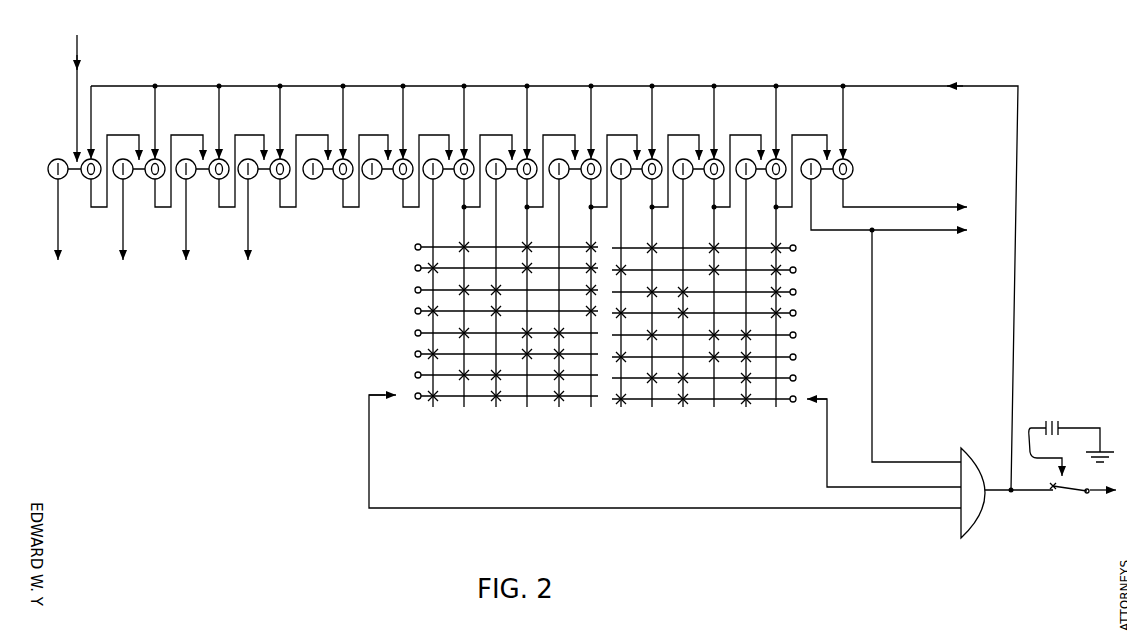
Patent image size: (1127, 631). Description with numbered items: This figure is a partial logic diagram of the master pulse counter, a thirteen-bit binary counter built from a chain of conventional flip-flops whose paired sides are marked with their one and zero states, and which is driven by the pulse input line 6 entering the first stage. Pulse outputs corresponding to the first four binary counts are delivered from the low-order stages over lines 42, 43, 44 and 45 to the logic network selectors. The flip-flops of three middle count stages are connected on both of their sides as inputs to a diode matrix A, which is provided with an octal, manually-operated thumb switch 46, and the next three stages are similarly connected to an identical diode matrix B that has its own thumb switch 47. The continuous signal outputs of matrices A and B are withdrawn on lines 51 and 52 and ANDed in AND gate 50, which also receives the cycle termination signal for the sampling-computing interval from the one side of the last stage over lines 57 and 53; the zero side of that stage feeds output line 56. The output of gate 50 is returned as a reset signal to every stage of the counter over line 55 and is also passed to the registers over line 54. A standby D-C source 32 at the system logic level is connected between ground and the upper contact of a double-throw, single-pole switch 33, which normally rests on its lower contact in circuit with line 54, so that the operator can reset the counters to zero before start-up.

The clock pulse input line 6 is at (83, 44).
The standby D-C source 32 is at (1053, 412).
The double-throw, single-pole switch 33 is at (1056, 482).
The output line 42 is at (57, 230).
The output line 43 is at (122, 232).
The output line 44 is at (185, 231).
The output line 45 is at (247, 230).
The thumb switch 46 is at (394, 406).
The thumb switch 47 is at (812, 408).
The AND gate 50 is at (968, 520).
The line 51 is at (470, 508).
The line 52 is at (820, 482).
The line 53 is at (872, 392).
The line 54 is at (1032, 492).
The line 55 is at (1015, 287).
The output line 56 is at (918, 207).
The line 57 is at (918, 230).
The diode matrix A is at (384, 298).
The diode matrix B is at (818, 332).